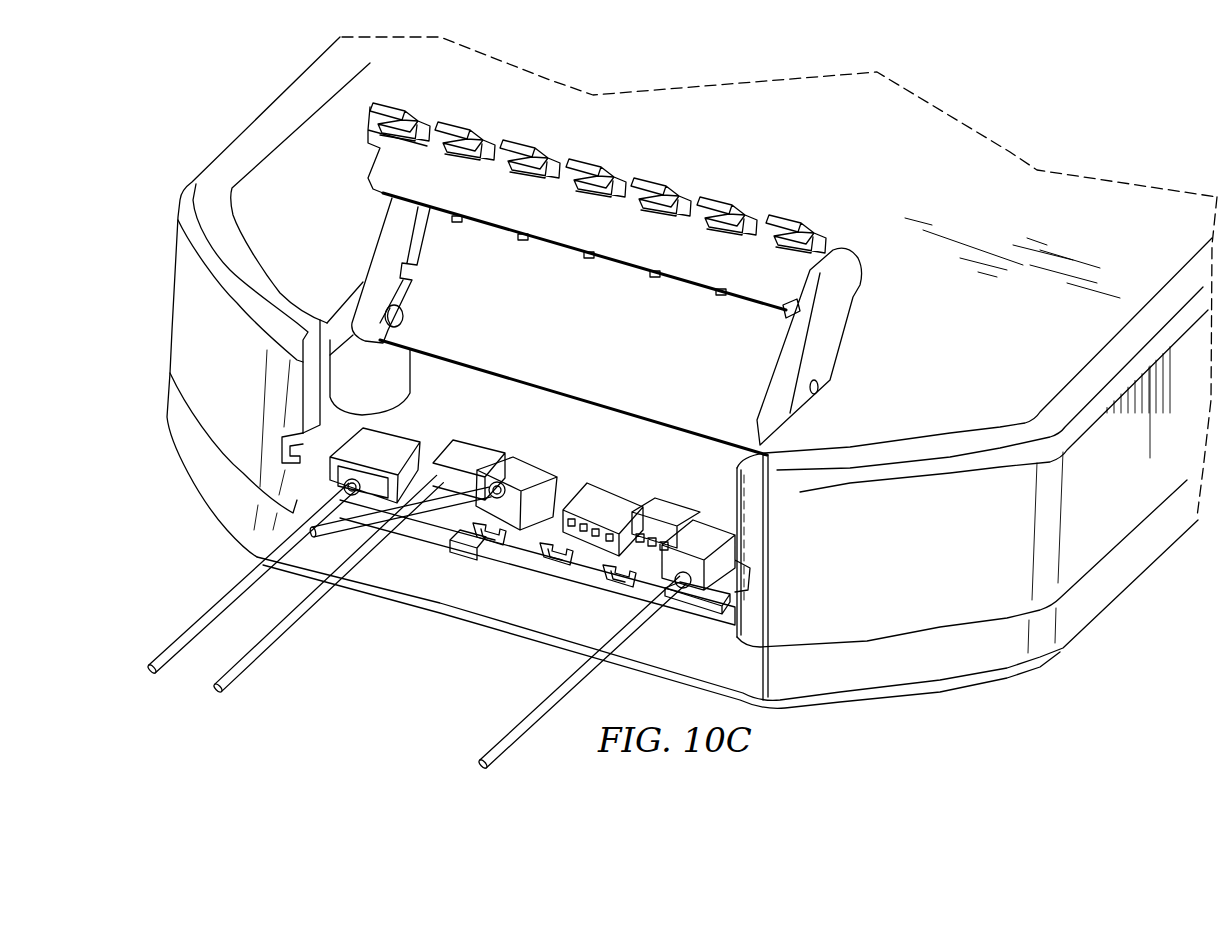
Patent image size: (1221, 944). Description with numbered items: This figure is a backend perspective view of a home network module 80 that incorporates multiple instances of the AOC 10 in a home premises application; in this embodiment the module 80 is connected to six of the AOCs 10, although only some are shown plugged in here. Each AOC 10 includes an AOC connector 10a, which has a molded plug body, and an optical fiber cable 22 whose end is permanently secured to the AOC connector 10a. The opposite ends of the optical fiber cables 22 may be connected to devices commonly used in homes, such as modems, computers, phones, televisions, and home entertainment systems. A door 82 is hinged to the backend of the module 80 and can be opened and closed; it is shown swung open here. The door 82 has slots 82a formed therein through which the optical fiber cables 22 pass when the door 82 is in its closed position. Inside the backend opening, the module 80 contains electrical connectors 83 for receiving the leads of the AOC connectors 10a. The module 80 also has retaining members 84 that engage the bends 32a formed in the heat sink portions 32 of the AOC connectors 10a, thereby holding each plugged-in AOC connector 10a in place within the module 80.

The home network module 80 is at (251, 89).
The door 82 is at (638, 279).
The slots 82a is at (598, 178).
The electrical connectors 83 is at (628, 502).
The retaining members 84 is at (530, 558).
The AOC 10 is at (407, 622).
The AOC connector 10a is at (388, 448).
The optical fiber cable 22 is at (190, 628).
The heat sink portions 32 is at (692, 610).
The bends 32a is at (463, 545).